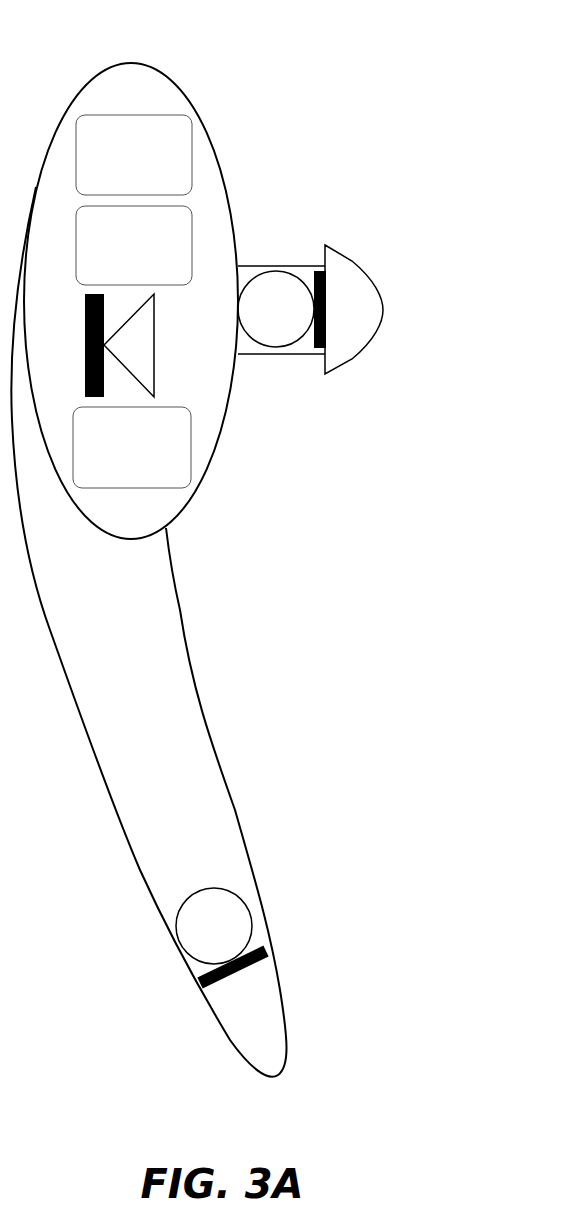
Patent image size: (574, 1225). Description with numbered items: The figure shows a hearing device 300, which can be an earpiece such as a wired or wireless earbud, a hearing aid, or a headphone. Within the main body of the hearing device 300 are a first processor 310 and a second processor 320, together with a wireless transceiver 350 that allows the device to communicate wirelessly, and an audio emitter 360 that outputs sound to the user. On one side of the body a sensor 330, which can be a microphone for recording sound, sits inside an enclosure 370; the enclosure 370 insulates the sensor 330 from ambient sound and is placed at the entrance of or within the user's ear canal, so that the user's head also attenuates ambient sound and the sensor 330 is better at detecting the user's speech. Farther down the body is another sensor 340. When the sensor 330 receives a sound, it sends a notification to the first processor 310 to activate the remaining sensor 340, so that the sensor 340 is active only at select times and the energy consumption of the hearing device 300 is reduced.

The hearing device 300 is at (133, 63).
The first processor 310 is at (134, 155).
The processor 320 is at (134, 245).
The sensor 330 is at (282, 309).
The sensor 340 is at (222, 938).
The transceiver 350 is at (132, 447).
The audio emitter 360 is at (119, 345).
The enclosure 370 is at (353, 262).